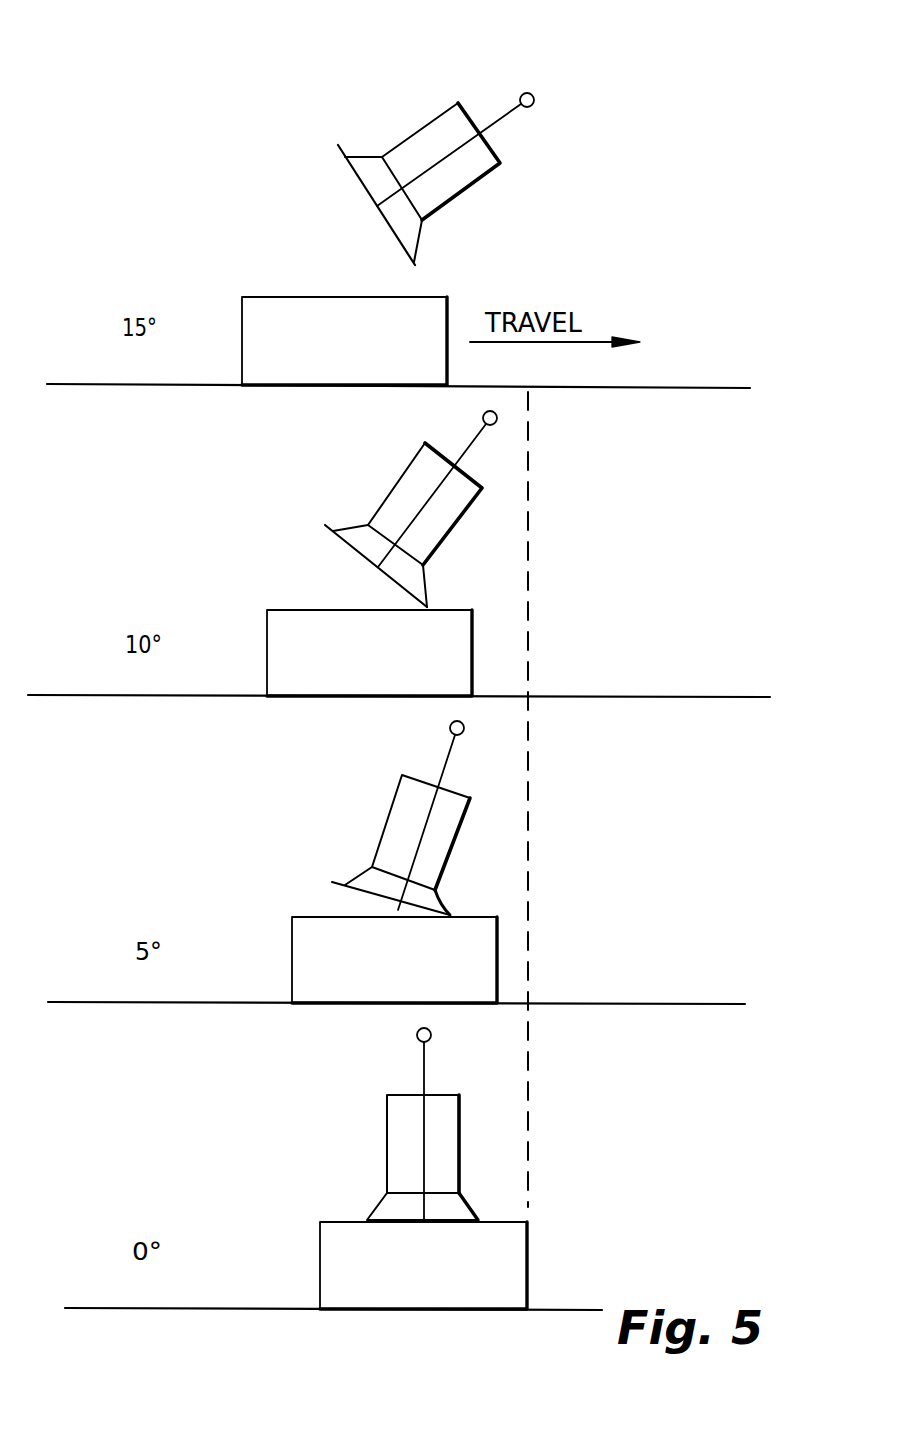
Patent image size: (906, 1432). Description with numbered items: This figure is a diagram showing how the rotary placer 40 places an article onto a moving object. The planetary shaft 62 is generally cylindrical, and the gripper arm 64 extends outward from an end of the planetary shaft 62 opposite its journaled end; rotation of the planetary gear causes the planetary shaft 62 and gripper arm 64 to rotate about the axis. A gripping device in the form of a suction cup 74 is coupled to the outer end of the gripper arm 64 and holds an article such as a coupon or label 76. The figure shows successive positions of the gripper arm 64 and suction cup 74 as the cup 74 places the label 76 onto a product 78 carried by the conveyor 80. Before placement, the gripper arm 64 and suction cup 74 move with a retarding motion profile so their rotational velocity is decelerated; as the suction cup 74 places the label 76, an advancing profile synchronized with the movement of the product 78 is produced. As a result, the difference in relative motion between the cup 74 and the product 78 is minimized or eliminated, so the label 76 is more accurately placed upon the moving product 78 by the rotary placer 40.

The rotary placer 40 is at (270, 48).
The planetary shaft 62 is at (533, 94).
The gripper arm 64 is at (490, 117).
The suction cup 74 is at (420, 130).
The label 76 is at (417, 258).
The product 78 is at (240, 301).
The conveyor 80 is at (83, 383).